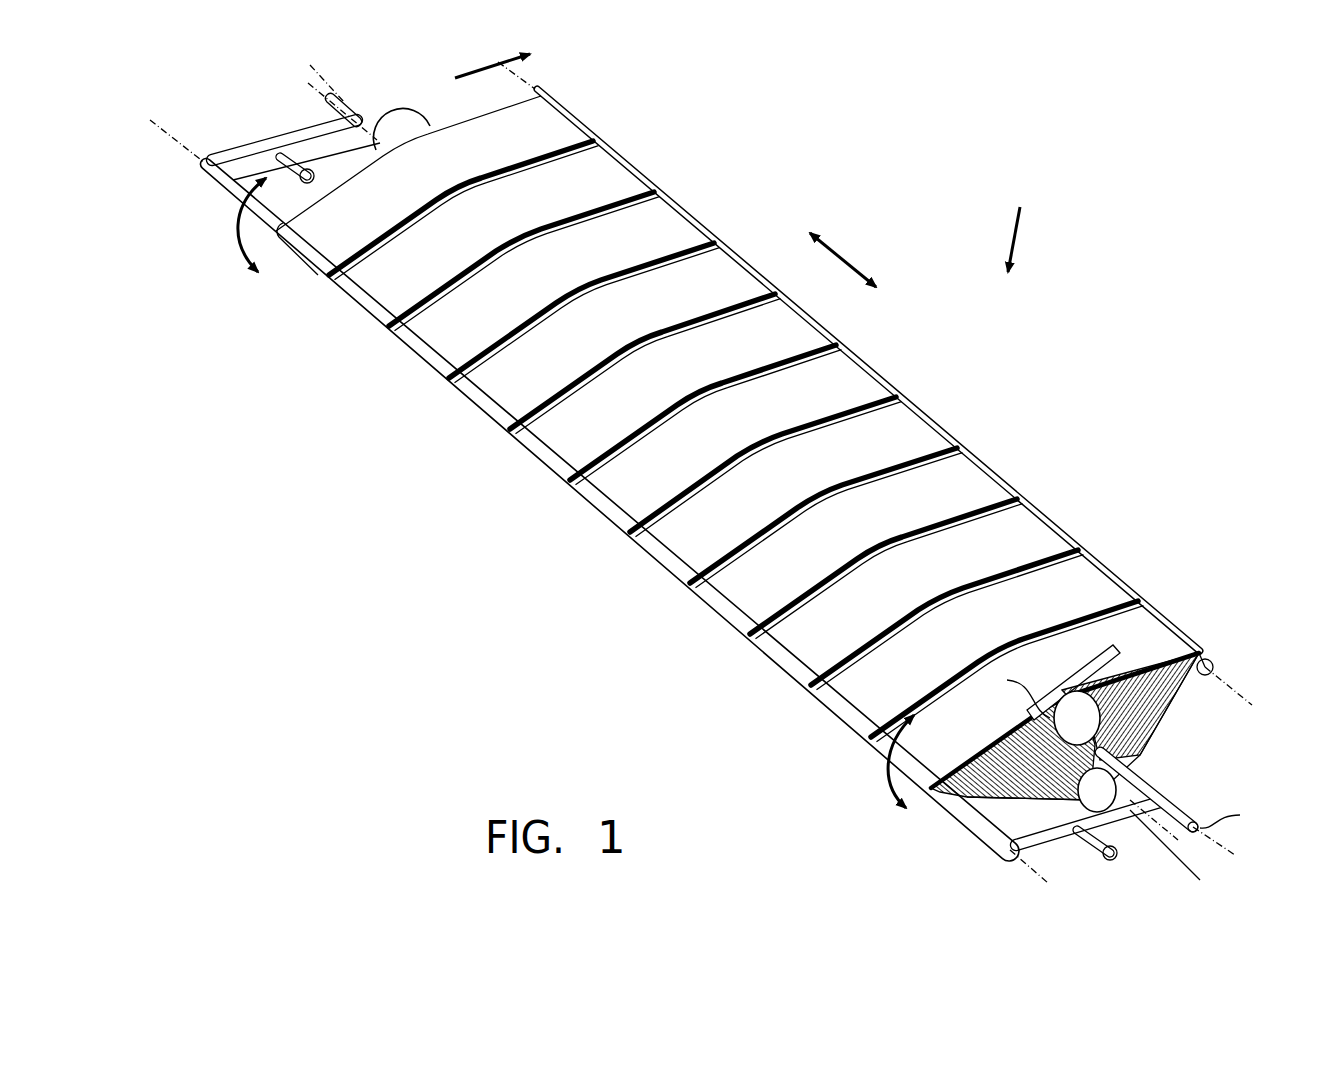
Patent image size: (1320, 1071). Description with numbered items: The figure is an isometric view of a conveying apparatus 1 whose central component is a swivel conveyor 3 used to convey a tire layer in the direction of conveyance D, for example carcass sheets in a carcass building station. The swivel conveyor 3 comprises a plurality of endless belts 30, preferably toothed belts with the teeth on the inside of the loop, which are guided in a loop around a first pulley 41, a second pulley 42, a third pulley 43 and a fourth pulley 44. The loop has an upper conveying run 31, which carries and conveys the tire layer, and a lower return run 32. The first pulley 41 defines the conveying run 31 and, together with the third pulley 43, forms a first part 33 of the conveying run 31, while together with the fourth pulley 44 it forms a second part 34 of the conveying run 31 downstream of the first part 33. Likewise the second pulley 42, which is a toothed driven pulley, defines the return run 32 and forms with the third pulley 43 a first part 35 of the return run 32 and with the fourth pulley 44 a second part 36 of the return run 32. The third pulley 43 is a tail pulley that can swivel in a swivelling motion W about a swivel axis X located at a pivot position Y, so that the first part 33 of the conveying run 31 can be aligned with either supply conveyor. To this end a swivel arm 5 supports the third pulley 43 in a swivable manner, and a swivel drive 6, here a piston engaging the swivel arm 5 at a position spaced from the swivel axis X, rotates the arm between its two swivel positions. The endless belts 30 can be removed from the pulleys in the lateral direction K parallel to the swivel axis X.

The conveying apparatus 1 is at (719, 487).
The swivel conveyor 3 is at (1020, 226).
The swivel arm 5 is at (240, 165).
The swivel drive 6 is at (305, 168).
The endless belts 30 is at (764, 441).
The conveying run 31 is at (736, 441).
The return run 32 is at (1065, 793).
The first part of the conveying run 33 is at (500, 397).
The second part of the conveying run 34 is at (627, 187).
The first part of the return run 35 is at (1012, 828).
The second part of the return run 36 is at (1175, 707).
The first pulley 41 is at (1080, 712).
The second pulley 42 is at (1125, 832).
The third pulley 43 is at (975, 834).
The fourth pulley 44 is at (1205, 660).